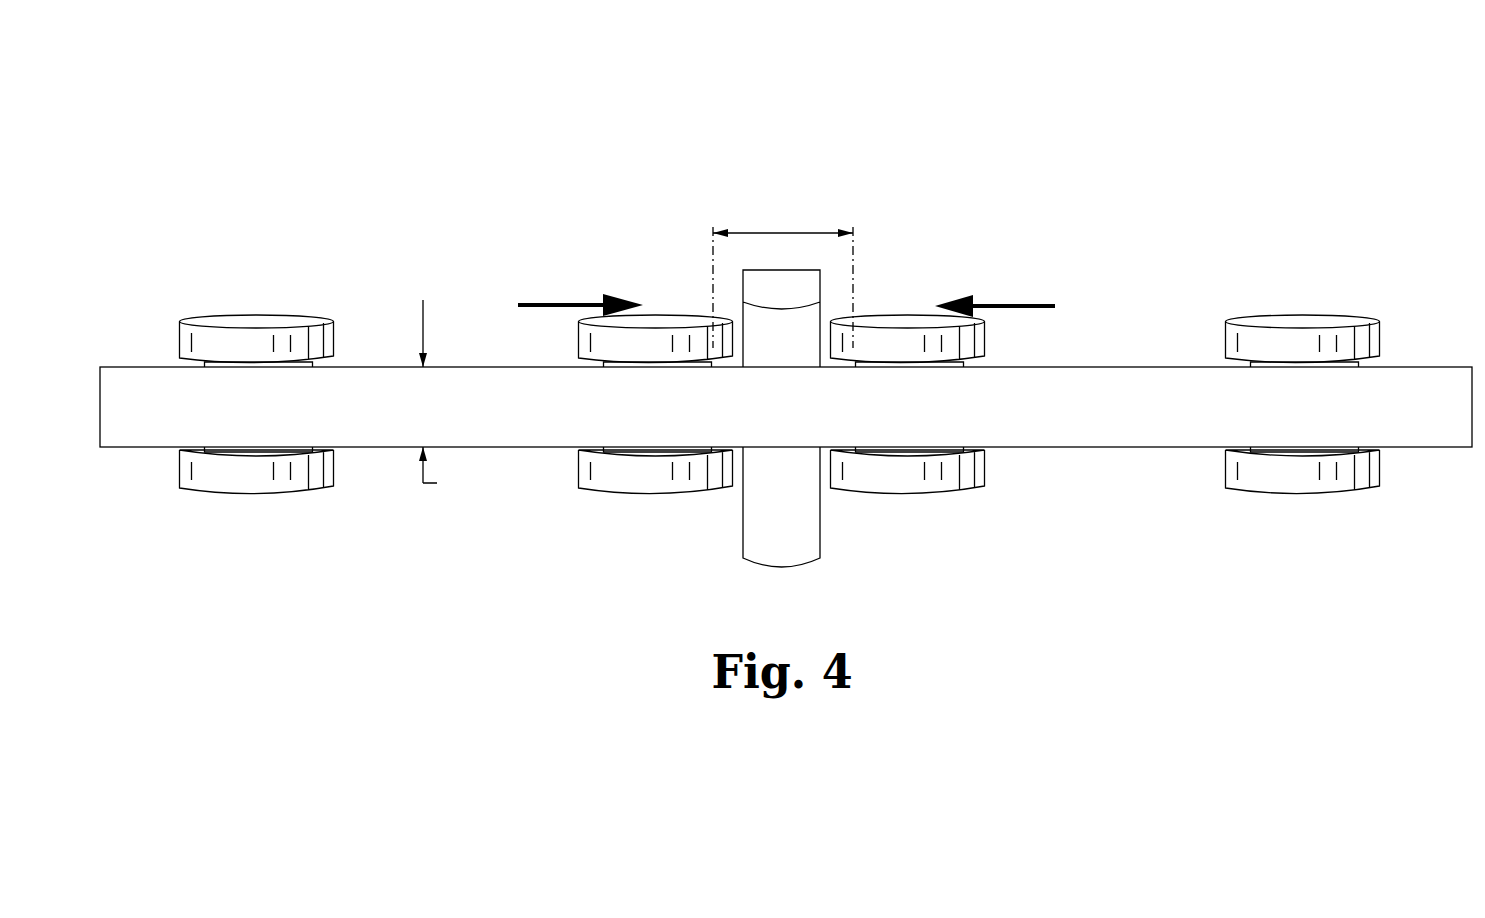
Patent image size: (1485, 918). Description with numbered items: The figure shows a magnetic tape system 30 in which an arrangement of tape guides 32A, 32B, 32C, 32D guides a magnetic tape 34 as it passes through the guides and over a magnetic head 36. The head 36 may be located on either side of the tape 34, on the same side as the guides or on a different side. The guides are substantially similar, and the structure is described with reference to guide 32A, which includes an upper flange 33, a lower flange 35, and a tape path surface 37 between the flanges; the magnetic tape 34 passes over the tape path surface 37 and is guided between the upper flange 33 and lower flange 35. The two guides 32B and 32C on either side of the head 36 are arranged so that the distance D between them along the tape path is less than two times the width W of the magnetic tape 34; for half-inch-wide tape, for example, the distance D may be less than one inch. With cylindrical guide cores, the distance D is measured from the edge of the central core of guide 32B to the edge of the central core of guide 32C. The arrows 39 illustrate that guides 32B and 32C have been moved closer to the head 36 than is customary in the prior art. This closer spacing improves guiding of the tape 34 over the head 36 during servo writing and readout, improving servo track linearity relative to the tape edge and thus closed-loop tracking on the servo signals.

The magnetic tape system 30 is at (1010, 100).
The tape guide 32A is at (295, 407).
The tape guide 32B is at (680, 318).
The tape guide 32C is at (898, 322).
The tape guide 32D is at (1335, 322).
The upper flange 33 is at (217, 337).
The magnetic tape 34 is at (1137, 422).
The lower flange 35 is at (247, 470).
The magnetic head 36 is at (793, 537).
The tape path surface 37 is at (340, 455).
The arrows 39 is at (548, 303).
The distance D is at (770, 232).
The width W is at (437, 483).